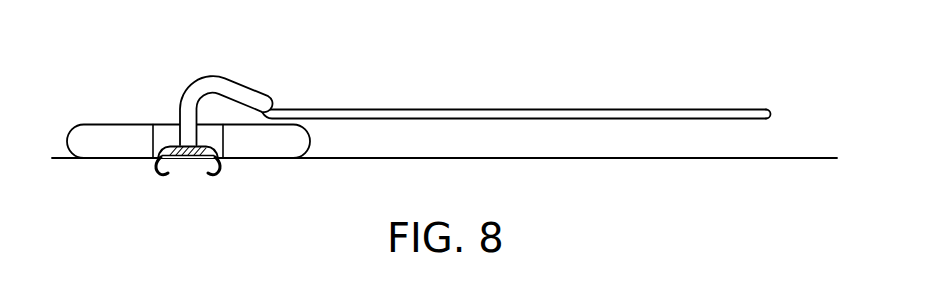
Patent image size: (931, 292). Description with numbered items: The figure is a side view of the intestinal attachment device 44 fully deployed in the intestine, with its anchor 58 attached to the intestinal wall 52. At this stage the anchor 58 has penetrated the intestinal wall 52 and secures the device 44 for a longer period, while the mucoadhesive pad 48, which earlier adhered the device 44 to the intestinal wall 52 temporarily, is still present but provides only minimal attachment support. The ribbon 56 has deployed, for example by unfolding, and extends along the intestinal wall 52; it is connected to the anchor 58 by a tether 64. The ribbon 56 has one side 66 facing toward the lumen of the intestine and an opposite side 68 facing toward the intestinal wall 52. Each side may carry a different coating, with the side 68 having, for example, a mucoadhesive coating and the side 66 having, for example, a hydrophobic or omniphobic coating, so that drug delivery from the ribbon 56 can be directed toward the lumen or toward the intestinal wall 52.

The intestinal attachment device 44 is at (451, 44).
The mucoadhesive pad 48 is at (137, 153).
The intestinal wall 52 is at (788, 160).
The ribbon 56 is at (500, 108).
The anchor 58 is at (170, 147).
The tether 64 is at (247, 93).
The side facing the lumen 66 is at (670, 108).
The side facing the intestinal wall 68 is at (715, 117).